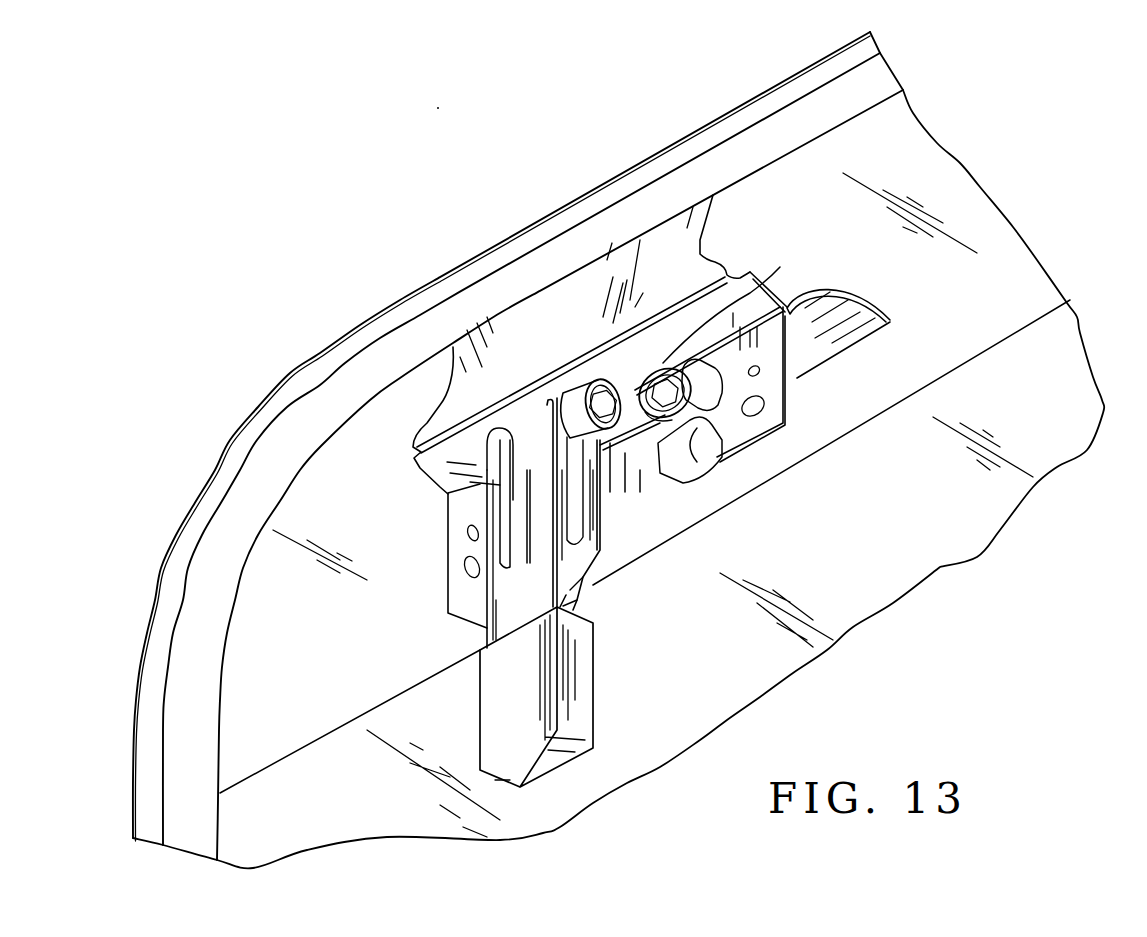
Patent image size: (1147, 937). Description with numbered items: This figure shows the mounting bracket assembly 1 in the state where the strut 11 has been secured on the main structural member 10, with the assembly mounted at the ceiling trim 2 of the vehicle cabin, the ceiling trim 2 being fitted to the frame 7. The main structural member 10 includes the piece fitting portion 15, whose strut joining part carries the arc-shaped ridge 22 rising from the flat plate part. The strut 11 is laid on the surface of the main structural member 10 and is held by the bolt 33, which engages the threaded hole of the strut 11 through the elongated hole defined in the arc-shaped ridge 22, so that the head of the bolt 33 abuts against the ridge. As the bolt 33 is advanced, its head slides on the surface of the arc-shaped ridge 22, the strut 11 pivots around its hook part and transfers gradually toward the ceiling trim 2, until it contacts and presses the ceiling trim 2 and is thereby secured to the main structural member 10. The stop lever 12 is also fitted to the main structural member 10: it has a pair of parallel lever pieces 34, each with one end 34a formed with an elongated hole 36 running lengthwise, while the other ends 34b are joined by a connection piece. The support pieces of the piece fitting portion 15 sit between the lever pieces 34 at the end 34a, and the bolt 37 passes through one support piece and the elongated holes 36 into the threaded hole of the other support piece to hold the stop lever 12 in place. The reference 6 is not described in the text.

The mounting bracket assembly 1 is at (426, 396).
The ceiling trim 2 is at (990, 257).
The rail 6 is at (707, 143).
The frame 7 is at (453, 347).
The main structural member 10 is at (787, 408).
The strut 11 is at (830, 337).
The stop lever 12 is at (593, 578).
The piece fitting portion 15 is at (583, 700).
The arc-shaped ridge 22 is at (717, 373).
The bolt 33 is at (748, 288).
The lever pieces 34 is at (597, 550).
The one end of lever piece 34a is at (463, 493).
The other end of lever piece 34b is at (480, 630).
The elongated hole 36 is at (507, 517).
The bolt 37 is at (607, 430).